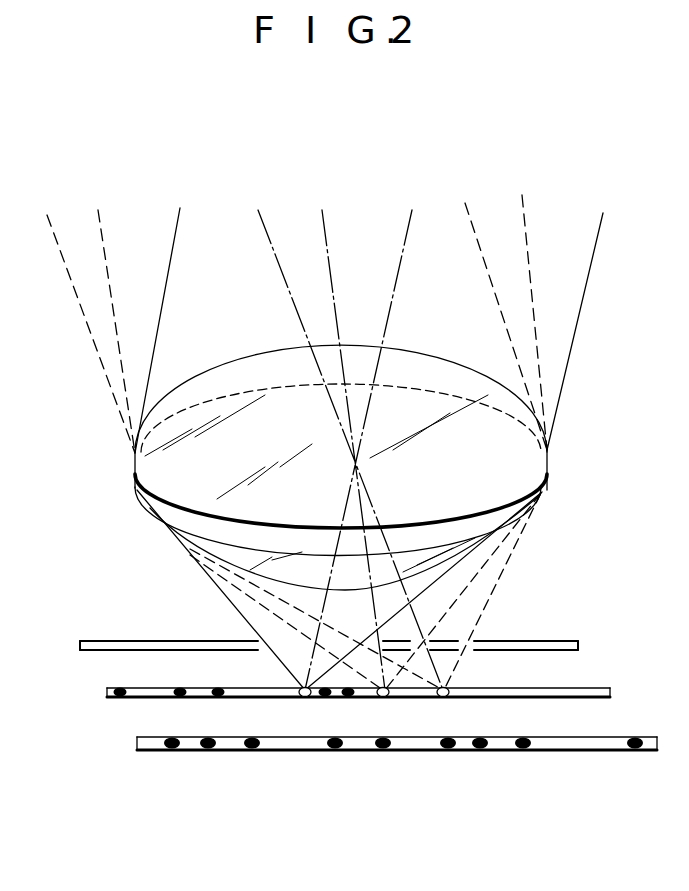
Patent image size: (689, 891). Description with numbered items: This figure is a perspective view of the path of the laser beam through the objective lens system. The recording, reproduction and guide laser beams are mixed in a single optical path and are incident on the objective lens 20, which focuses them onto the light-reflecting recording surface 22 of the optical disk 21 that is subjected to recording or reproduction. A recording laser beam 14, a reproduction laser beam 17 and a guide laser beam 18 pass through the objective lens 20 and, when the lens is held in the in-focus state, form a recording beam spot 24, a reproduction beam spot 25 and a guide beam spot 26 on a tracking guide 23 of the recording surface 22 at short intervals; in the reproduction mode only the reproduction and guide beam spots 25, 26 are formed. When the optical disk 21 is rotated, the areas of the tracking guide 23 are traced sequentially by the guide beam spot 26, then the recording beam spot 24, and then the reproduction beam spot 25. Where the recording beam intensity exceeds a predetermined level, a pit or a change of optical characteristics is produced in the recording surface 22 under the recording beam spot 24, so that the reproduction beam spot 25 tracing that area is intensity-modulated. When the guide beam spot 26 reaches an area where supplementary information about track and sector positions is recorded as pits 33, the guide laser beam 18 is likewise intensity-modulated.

The recording laser beam 14 is at (105, 257).
The guide laser beam 18 is at (88, 335).
The objective lens 20 is at (548, 472).
The optical disk 21 is at (540, 570).
The recording surface 22 is at (545, 597).
The tracking guide 23 is at (563, 642).
The reproduction laser beam 17 is at (220, 592).
The recording beam spot 24 is at (384, 697).
The reproduction beam spot 25 is at (305, 697).
The guide beam spot 26 is at (444, 697).
The pits 33 is at (172, 699).